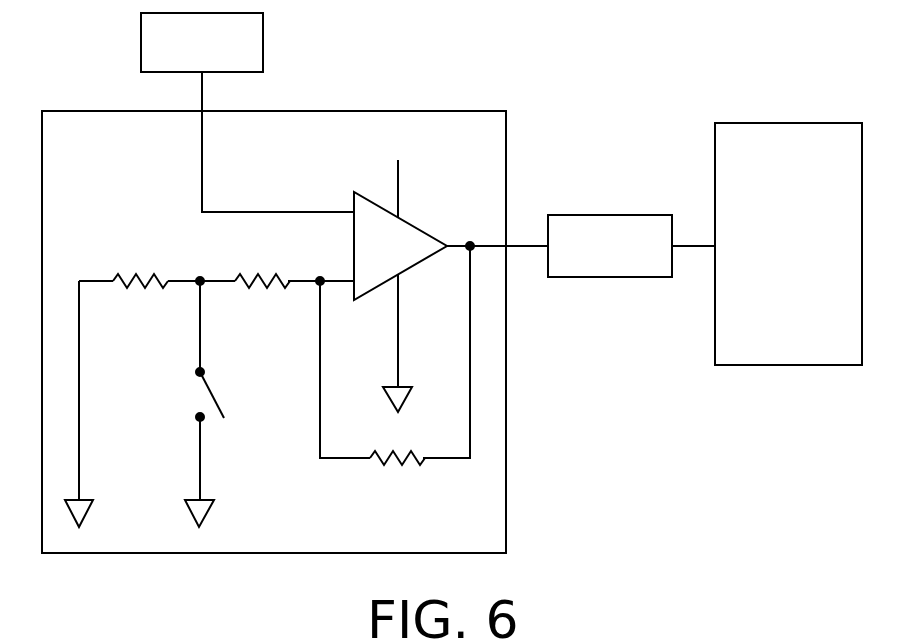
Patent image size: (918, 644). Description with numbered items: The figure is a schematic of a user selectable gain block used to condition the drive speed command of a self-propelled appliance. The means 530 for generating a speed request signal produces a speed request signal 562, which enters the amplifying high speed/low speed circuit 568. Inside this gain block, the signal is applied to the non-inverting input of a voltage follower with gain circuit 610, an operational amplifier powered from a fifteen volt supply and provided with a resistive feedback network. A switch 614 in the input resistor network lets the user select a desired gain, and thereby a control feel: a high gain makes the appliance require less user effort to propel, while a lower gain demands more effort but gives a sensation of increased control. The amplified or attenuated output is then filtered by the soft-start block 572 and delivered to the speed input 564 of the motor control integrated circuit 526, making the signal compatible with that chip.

The means for generating a speed request signal 530 is at (223, 52).
The speed request signal 562 is at (203, 100).
The gain block 568 is at (368, 111).
The voltage follower with gain circuit 610 is at (349, 186).
The switch 614 is at (227, 428).
The soft-start block 572 is at (572, 215).
The speed input 564 is at (712, 249).
The motor control integrated circuit 526 is at (795, 122).